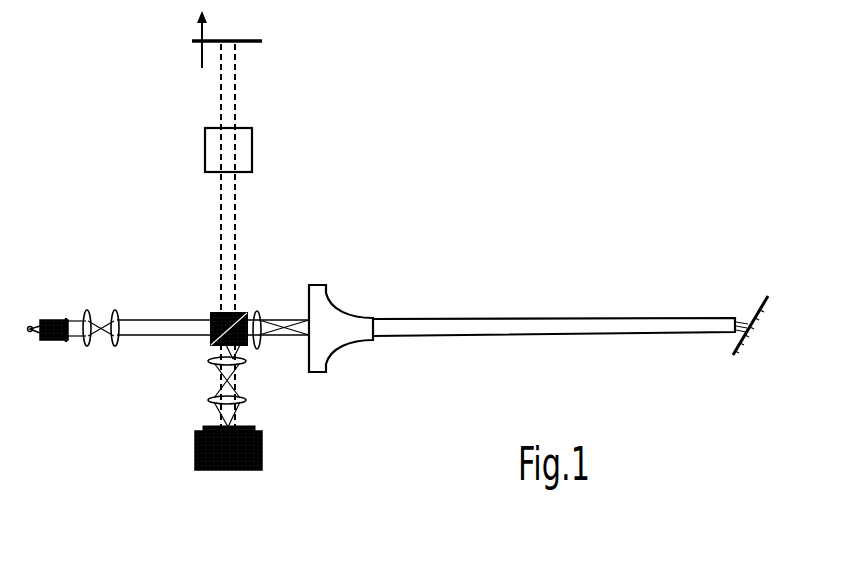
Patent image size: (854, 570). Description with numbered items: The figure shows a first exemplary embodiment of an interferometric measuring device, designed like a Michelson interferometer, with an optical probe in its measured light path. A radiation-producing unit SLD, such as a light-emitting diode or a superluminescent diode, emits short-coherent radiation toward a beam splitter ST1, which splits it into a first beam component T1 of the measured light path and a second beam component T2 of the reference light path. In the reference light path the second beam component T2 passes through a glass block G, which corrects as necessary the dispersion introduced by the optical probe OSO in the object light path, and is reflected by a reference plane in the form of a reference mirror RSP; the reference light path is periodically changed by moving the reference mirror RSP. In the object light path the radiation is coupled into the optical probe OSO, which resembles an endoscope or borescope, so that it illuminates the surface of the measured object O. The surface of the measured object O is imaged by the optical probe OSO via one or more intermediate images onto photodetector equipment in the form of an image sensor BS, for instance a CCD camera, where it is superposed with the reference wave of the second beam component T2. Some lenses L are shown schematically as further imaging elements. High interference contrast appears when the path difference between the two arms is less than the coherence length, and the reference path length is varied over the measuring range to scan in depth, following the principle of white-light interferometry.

The reference mirror RSP is at (262, 43).
The glass block G is at (252, 148).
The second beam component T2 is at (237, 231).
The beam splitter ST1 is at (211, 316).
The first beam component T1 is at (287, 318).
The lenses L is at (258, 345).
The radiation-producing unit SLD is at (55, 341).
The optical probe OSO is at (482, 318).
The measured object O is at (735, 357).
The image sensor BS is at (240, 470).